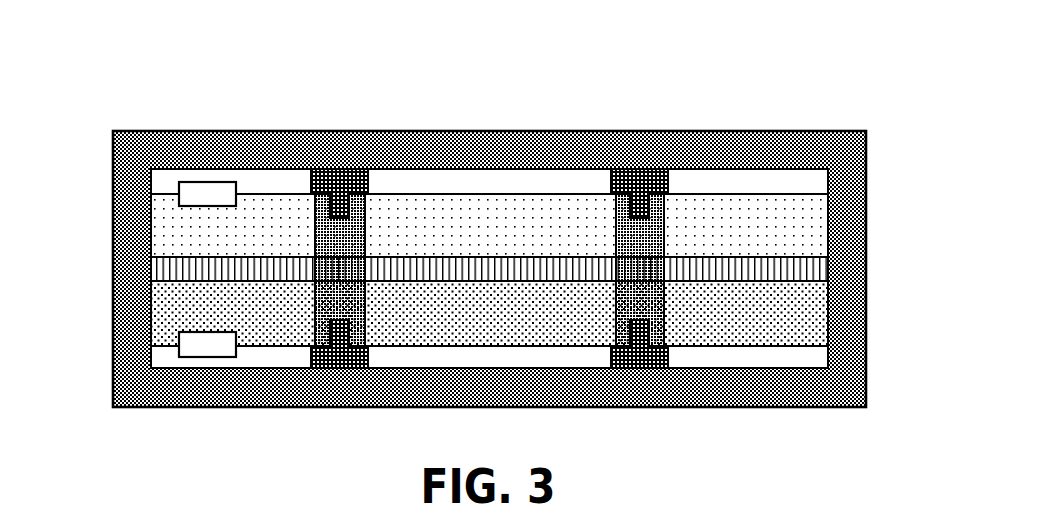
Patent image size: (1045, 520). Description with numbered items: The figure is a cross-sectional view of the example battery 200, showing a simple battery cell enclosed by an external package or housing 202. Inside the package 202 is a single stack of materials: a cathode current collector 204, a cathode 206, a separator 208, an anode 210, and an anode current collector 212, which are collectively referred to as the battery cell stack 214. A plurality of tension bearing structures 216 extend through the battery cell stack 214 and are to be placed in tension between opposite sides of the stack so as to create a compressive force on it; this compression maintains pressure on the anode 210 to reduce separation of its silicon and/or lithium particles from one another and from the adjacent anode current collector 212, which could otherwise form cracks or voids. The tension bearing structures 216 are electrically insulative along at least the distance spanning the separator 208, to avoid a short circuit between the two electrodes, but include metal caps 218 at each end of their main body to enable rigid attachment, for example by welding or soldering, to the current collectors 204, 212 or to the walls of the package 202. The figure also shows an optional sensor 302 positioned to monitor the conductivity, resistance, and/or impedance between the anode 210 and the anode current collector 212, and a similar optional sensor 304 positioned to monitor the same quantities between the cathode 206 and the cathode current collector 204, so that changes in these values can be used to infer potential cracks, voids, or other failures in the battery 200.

The battery 200 is at (772, 67).
The package 202 is at (120, 152).
The cathode current collector 204 is at (818, 357).
The cathode 206 is at (818, 314).
The separator 208 is at (818, 269).
The anode 210 is at (818, 225).
The anode current collector 212 is at (818, 183).
The battery cell stack 214 is at (113, 171).
The tension bearing structures 216 is at (348, 245).
The metal caps 218 is at (310, 178).
The sensor 302 is at (203, 190).
The sensor 304 is at (203, 347).